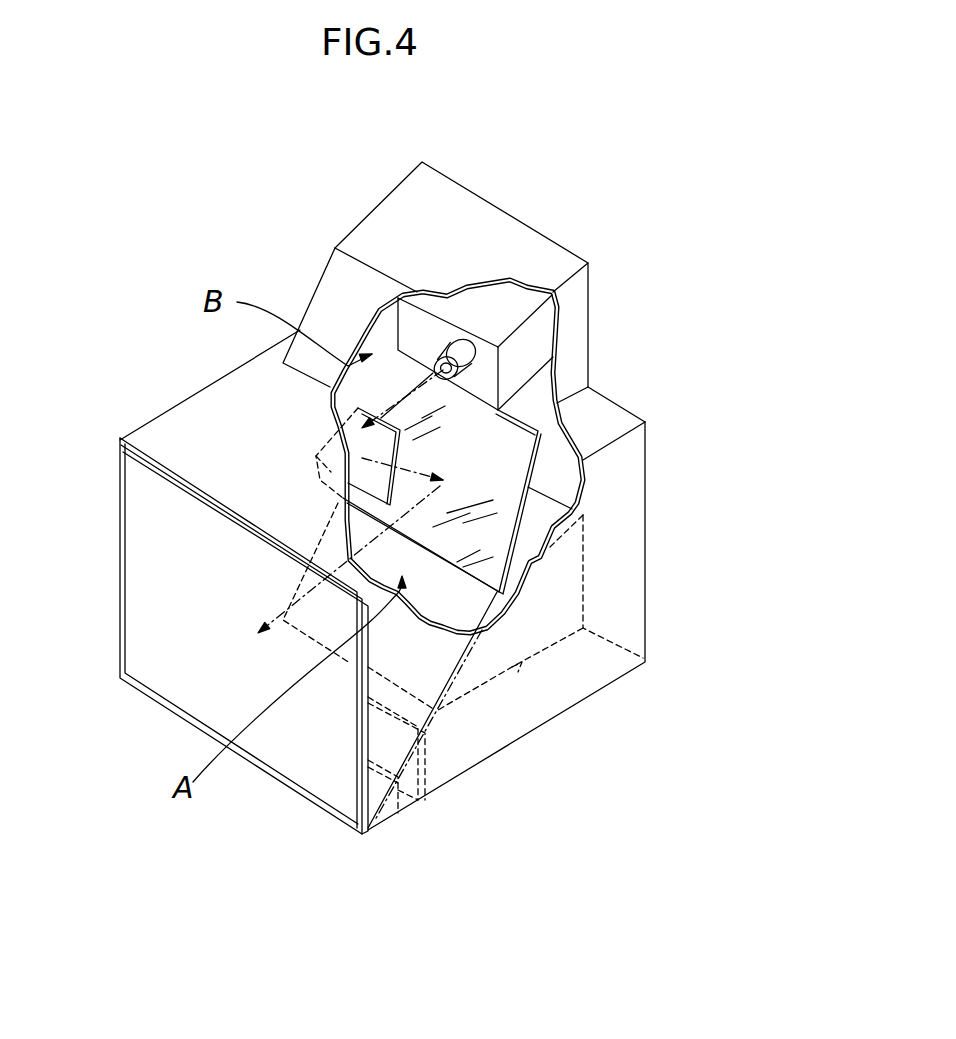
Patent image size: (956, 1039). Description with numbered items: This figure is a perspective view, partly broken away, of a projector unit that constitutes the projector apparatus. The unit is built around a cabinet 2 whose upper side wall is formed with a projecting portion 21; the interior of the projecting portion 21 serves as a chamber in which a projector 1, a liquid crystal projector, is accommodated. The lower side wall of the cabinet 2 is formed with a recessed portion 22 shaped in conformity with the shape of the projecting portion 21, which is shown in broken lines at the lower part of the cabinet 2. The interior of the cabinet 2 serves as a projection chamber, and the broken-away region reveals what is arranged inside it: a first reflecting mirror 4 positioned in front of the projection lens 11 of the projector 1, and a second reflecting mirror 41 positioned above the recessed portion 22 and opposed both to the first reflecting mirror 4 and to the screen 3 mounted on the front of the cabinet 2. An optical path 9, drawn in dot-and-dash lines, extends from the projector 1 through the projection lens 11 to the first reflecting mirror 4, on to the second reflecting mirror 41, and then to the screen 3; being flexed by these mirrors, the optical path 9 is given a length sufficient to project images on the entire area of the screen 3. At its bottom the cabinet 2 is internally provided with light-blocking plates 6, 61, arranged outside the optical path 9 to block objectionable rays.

The projector 1 is at (513, 373).
The projection lens 11 is at (445, 371).
The cabinet 2 is at (617, 498).
The projecting portion 21 is at (513, 242).
The recessed portion 22 is at (513, 668).
The screen 3 is at (160, 562).
The first reflecting mirror 4 is at (360, 432).
The second reflecting mirror 41 is at (442, 511).
The light-blocking plate 6 is at (427, 760).
The light-blocking plate 61 is at (408, 813).
The optical path 9 is at (417, 460).